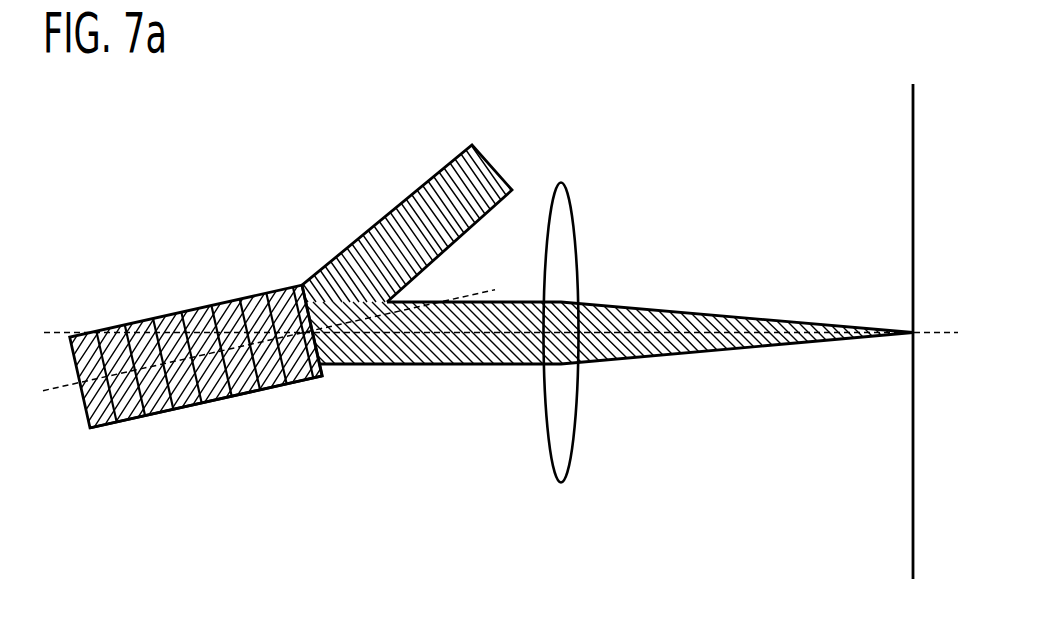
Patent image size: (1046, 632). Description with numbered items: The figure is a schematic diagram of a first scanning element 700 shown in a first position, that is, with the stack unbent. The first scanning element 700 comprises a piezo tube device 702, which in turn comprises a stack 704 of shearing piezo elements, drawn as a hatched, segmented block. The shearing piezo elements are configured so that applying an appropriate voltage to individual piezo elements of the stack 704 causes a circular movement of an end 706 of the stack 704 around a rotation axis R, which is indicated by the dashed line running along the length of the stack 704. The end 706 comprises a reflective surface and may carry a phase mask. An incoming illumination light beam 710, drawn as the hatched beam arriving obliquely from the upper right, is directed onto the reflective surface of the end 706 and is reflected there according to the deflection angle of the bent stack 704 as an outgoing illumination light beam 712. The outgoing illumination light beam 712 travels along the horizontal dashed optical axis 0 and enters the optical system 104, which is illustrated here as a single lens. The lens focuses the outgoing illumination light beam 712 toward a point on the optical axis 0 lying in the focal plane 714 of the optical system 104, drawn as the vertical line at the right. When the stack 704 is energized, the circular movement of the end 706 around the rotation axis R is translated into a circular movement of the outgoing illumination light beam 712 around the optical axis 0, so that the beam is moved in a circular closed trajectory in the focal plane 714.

The first scanning element 700 is at (160, 198).
The piezo tube device 702 is at (215, 412).
The stack of shearing piezo elements 704 is at (165, 323).
The end of the stack 706 is at (323, 371).
The incoming illumination light beam 710 is at (428, 182).
The outgoing illumination light beam 712 is at (468, 366).
The optical system 104 is at (577, 445).
The focal plane 714 is at (912, 499).
The optical axis 0 is at (935, 337).
The rotation axis R is at (62, 393).